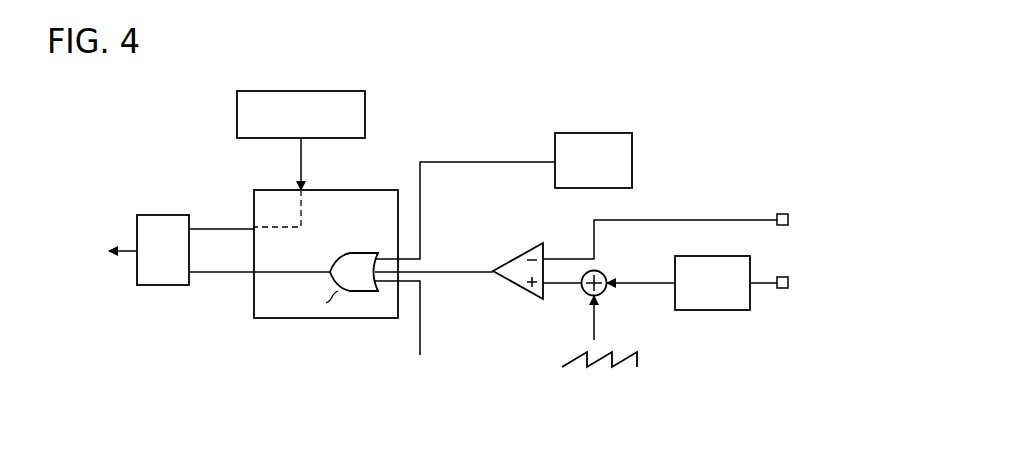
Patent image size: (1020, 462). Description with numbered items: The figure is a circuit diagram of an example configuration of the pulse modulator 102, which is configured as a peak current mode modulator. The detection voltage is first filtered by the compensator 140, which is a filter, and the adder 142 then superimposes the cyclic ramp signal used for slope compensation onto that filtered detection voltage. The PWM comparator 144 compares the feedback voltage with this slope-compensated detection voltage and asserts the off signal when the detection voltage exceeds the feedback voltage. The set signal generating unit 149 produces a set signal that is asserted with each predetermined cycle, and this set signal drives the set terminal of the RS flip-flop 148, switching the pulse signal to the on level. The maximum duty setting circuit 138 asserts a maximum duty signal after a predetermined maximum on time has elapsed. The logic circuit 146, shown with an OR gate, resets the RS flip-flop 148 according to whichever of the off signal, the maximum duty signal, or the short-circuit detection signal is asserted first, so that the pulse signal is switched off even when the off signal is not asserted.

The pulse modulator 102 is at (462, 422).
The maximum duty setting circuit 138 is at (602, 133).
The compensator 140 is at (720, 310).
The adder 142 is at (603, 277).
The PWM comparator 144 is at (515, 283).
The logic circuit 146 is at (340, 190).
The RS flip-flop 148 is at (158, 285).
The set signal generating unit 149 is at (240, 138).